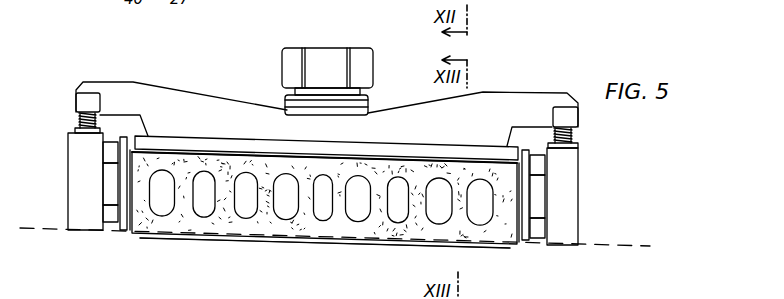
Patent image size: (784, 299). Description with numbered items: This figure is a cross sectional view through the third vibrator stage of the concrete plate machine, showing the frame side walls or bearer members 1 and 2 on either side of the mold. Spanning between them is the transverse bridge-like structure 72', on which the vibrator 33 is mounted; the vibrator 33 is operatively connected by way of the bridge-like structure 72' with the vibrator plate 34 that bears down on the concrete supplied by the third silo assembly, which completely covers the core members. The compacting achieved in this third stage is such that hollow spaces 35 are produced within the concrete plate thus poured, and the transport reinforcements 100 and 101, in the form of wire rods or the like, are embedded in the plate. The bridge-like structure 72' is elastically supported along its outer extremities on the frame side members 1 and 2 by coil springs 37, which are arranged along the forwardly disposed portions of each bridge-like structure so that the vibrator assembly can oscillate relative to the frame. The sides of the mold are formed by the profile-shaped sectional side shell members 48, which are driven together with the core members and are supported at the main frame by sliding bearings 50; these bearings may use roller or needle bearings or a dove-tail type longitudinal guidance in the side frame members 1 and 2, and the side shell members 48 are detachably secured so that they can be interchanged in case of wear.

The side wall or bearer member 1 is at (82, 217).
The side wall or bearer member 2 is at (565, 227).
The vibrator 33 is at (321, 57).
The vibrator plate 34 is at (222, 150).
The hollow spaces 35 is at (286, 213).
The coil springs 37 is at (78, 118).
The side shell member 48 is at (128, 203).
The sliding bearing 50 is at (100, 215).
The transverse bridge-like structure 72' is at (327, 102).
The transport reinforcement 100 is at (420, 173).
The transport reinforcement 101 is at (375, 228).